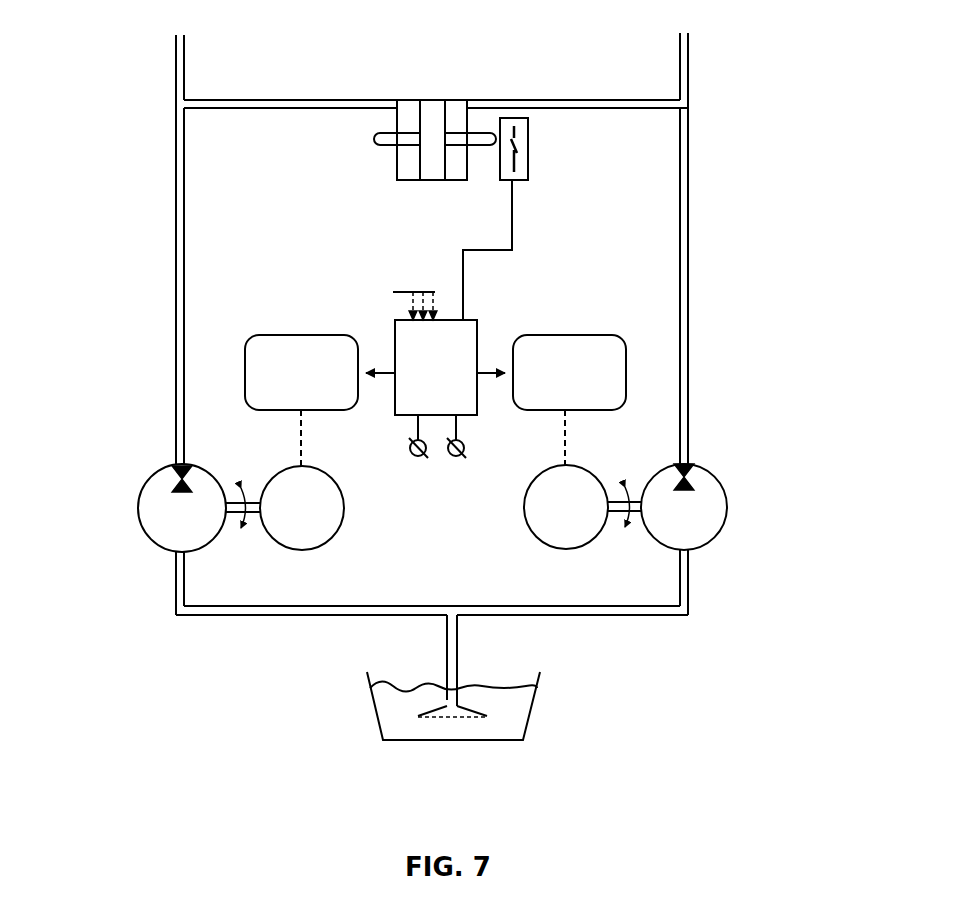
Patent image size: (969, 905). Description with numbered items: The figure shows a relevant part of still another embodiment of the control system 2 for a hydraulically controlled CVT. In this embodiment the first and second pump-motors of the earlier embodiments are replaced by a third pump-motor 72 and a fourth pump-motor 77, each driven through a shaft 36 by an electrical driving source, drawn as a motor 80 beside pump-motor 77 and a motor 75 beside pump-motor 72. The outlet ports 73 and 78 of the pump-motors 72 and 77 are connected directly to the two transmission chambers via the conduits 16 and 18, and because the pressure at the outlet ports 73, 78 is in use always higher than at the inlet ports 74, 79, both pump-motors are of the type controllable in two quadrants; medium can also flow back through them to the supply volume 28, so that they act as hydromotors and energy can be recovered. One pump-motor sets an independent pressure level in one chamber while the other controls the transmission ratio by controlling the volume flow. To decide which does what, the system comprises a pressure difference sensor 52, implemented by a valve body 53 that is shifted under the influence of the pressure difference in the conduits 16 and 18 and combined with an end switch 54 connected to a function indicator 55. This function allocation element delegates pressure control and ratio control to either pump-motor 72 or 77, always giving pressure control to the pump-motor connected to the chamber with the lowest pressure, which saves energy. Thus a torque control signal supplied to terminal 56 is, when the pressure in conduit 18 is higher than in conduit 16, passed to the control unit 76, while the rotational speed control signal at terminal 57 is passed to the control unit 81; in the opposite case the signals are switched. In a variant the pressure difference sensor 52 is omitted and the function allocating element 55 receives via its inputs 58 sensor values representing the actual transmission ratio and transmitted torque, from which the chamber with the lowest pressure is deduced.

The control system 2 is at (74, 722).
The conduit 16 is at (688, 306).
The conduit 18 is at (176, 306).
The supply volume 28 is at (520, 698).
The shaft 36 is at (254, 515).
The pressure difference sensor 52 is at (506, 65).
The valve body 53 is at (432, 106).
The end switch 54 is at (528, 178).
The function indicator 55 is at (470, 340).
The terminal 56 is at (415, 458).
The terminal 57 is at (459, 458).
The inputs 58 is at (393, 288).
The third pump-motor 72 is at (720, 503).
The outlet port 73 is at (697, 458).
The inlet port 74 is at (698, 553).
The starboard motor 75 is at (538, 518).
The control unit 76 is at (598, 345).
The fourth pump-motor 77 is at (152, 500).
The outlet port 78 is at (170, 466).
The inlet port 79 is at (168, 556).
The port motor 80 is at (336, 526).
The control unit 81 is at (272, 345).